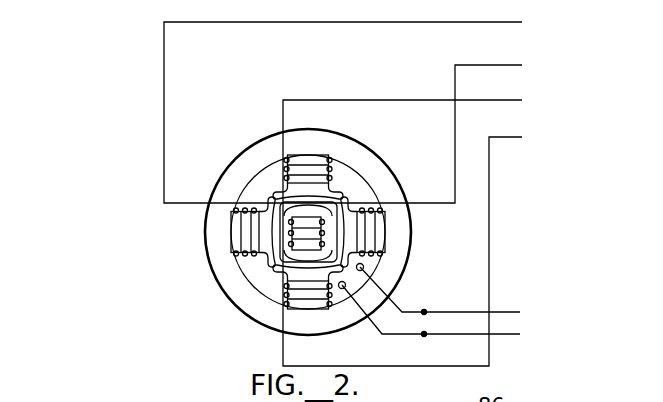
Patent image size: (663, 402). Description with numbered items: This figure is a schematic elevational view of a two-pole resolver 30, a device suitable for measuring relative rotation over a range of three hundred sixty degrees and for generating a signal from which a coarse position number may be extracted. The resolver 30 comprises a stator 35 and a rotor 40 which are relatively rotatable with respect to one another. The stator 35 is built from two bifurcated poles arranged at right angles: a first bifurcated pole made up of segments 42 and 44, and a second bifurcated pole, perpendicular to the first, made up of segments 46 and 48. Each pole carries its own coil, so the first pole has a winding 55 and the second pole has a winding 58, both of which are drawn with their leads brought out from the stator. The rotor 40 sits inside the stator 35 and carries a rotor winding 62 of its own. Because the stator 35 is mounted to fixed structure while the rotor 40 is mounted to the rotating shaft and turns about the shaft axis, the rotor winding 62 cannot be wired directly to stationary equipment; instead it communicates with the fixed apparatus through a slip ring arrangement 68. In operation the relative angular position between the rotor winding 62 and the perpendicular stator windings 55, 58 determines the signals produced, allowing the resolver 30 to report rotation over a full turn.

The two-pole resolver 30 is at (82, 183).
The stator 35 is at (259, 148).
The rotor 40 is at (278, 300).
The segment of first bifurcated pole 42 is at (314, 182).
The segment of first bifurcated pole 44 is at (310, 305).
The segment of second bifurcated pole 46 is at (250, 237).
The segment of second bifurcated pole 48 is at (367, 238).
The winding 55 is at (525, 100).
The winding 58 is at (525, 22).
The rotor winding 62 is at (525, 305).
The slip ring arrangement 68 is at (366, 268).